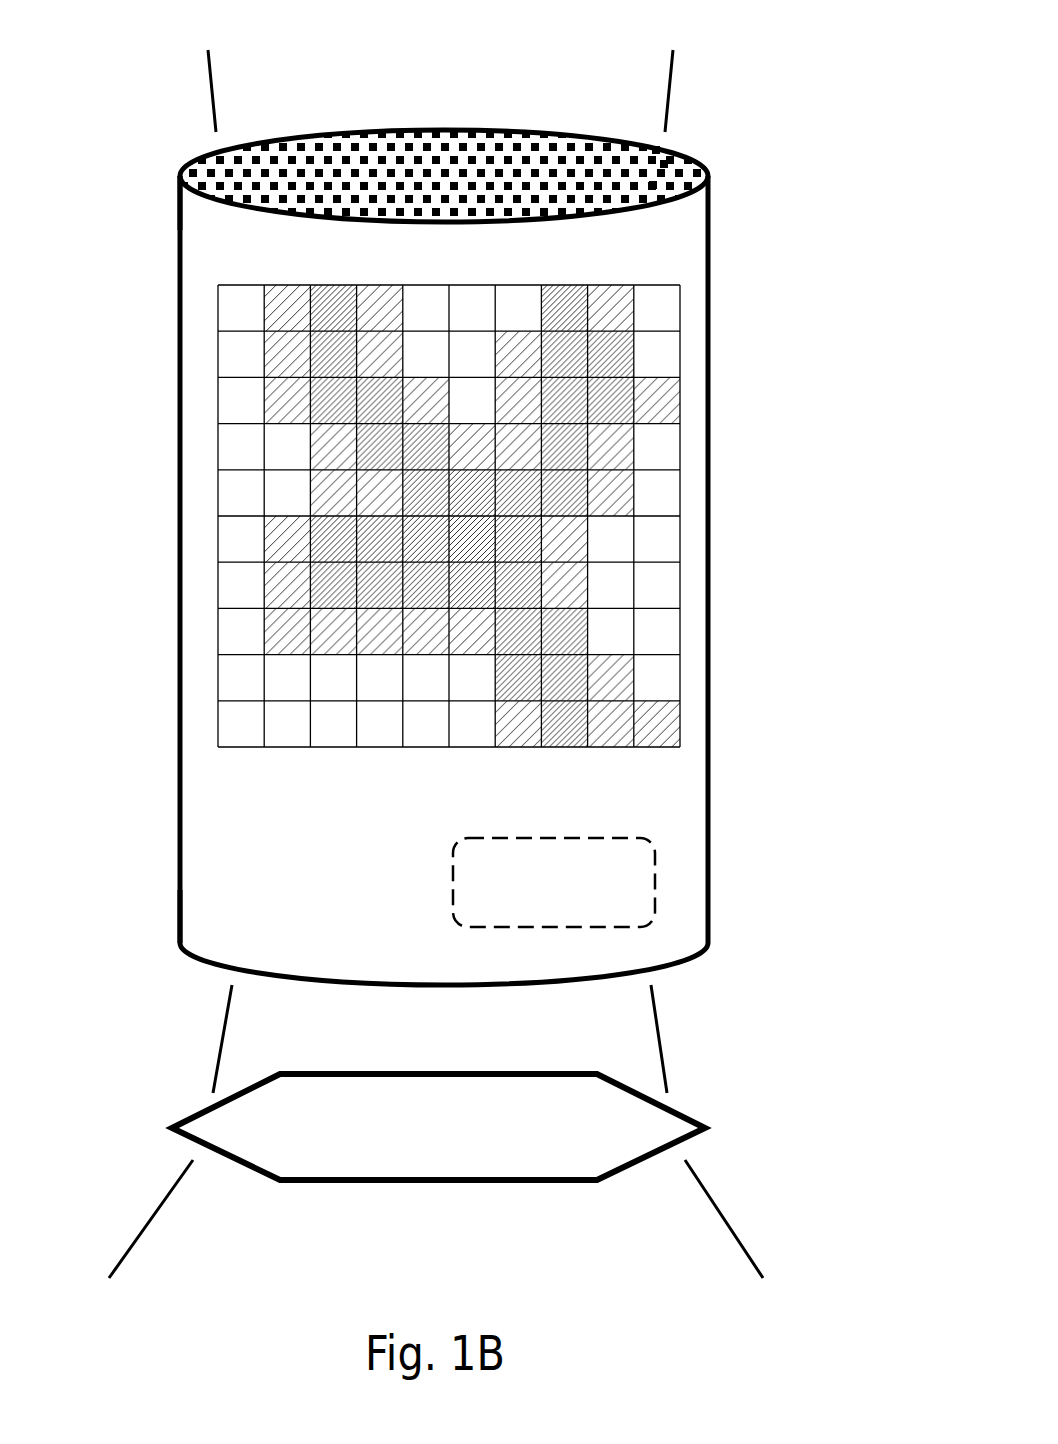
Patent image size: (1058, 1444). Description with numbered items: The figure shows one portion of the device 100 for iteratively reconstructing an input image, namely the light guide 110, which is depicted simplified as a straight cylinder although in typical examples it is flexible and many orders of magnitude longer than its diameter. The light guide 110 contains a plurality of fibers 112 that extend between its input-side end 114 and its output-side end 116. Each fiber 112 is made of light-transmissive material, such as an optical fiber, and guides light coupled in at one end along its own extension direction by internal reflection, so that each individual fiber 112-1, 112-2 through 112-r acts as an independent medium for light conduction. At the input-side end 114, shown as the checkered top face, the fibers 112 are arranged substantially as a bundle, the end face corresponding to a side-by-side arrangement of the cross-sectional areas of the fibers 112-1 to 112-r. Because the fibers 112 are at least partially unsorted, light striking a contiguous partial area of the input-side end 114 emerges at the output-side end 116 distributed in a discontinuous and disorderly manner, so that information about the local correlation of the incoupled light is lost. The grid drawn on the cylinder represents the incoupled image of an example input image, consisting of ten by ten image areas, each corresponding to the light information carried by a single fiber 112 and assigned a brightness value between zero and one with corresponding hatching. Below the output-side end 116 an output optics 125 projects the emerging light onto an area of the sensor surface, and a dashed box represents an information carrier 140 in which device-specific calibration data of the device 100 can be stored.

The device 100 is at (767, 24).
The light guide 110 is at (178, 468).
The fibers 112 is at (815, 63).
The fiber 112-1 is at (660, 150).
The fiber 112-2 is at (668, 162).
The fiber 112-r is at (657, 187).
The input-side end 114 is at (178, 207).
The output-side end 116 is at (178, 893).
The output optics 125 is at (192, 1113).
The information carrier 140 is at (655, 877).